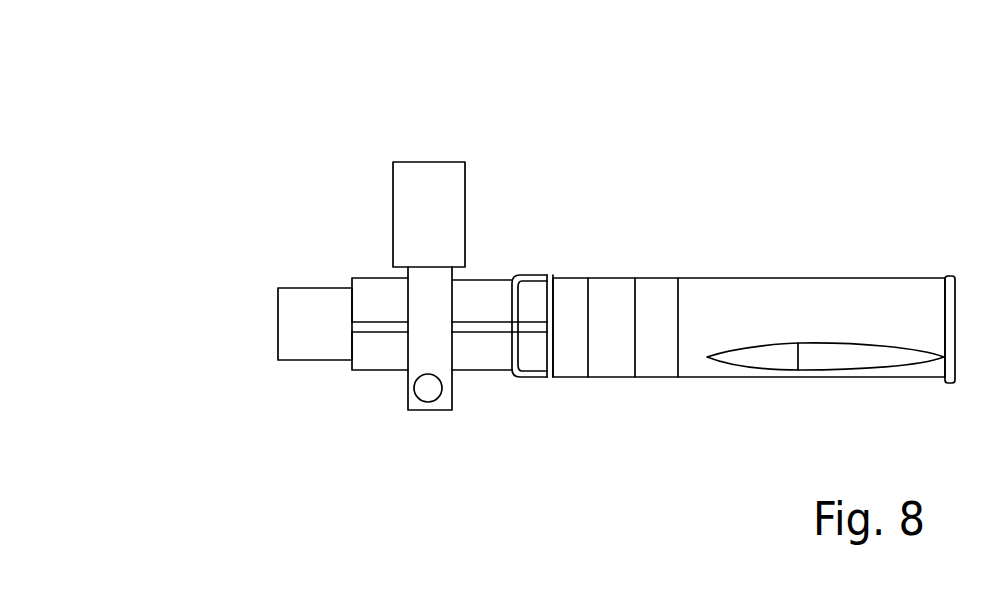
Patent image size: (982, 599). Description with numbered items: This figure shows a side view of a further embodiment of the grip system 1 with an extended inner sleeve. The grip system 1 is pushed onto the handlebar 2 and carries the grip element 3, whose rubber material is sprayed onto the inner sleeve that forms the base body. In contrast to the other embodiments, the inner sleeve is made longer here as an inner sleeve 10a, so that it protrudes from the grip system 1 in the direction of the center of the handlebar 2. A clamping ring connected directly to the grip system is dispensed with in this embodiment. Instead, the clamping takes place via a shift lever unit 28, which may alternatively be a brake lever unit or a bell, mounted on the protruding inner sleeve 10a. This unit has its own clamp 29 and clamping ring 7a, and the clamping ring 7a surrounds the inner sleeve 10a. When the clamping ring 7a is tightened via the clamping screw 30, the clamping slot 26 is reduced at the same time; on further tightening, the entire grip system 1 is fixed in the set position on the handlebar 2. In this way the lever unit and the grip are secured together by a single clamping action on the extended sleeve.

The grip system 1 is at (745, 252).
The handlebar 2 is at (318, 327).
The grip element 3 is at (868, 292).
The clamping ring 7a is at (533, 282).
The inner sleeve 10a is at (486, 360).
The clamping slot 26 is at (481, 328).
The shift lever unit 28 is at (427, 185).
The clamp 29 is at (420, 352).
The clamping screw 30 is at (432, 396).